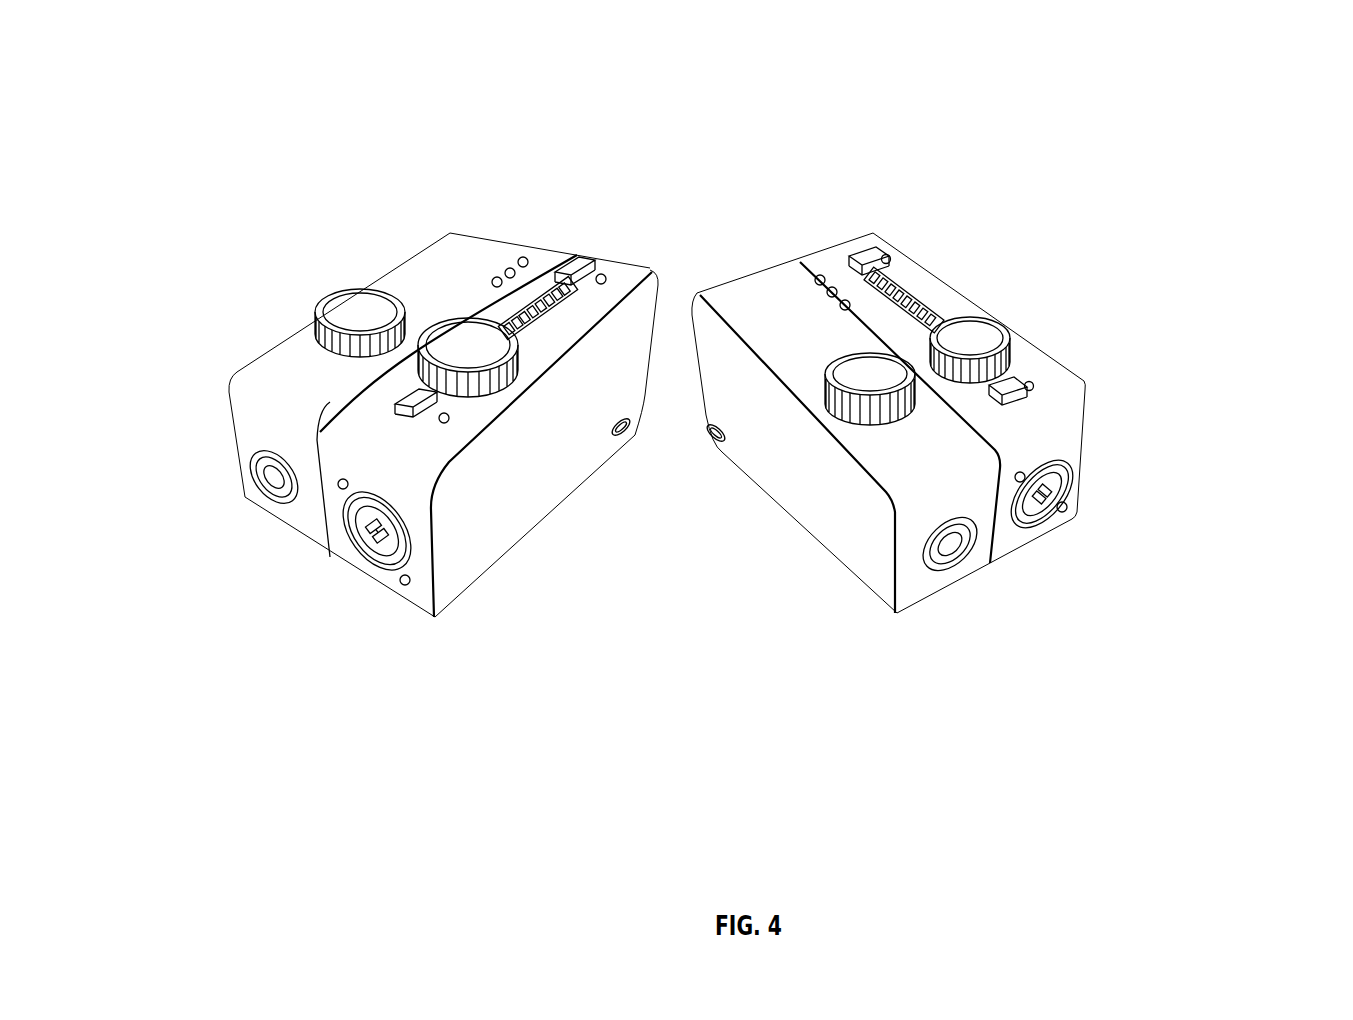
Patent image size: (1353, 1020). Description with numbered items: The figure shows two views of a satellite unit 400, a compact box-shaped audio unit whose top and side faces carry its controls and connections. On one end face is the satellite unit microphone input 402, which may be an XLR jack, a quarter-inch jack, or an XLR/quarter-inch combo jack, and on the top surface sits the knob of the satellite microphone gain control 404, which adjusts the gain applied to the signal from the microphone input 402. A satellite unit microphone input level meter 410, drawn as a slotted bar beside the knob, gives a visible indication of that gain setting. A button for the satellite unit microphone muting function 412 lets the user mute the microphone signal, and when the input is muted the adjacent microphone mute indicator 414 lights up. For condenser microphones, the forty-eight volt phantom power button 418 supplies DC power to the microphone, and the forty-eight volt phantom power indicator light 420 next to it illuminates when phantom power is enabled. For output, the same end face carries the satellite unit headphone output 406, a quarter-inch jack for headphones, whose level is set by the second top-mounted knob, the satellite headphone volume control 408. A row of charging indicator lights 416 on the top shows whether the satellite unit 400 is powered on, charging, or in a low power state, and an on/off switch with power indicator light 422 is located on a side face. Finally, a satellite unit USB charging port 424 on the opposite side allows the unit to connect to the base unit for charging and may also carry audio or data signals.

The satellite unit 400 is at (1253, 68).
The satellite unit microphone input 402 is at (379, 560).
The satellite microphone gain control 404 is at (1003, 328).
The satellite unit headphone output 406 is at (258, 494).
The satellite headphone volume control 408 is at (320, 337).
The satellite unit microphone input level meter 410 is at (913, 296).
The satellite unit microphone muting function 412 is at (1172, 472).
The microphone mute indicator 414 is at (1033, 384).
The charging indicator lights 416 is at (528, 258).
The +48V Phantom Power button 418 is at (862, 250).
The +48V Phantom Power indicator light 420 is at (887, 256).
The on/off switch with power indicator light 422 is at (626, 425).
The satellite unit USB charging port 424 is at (722, 436).